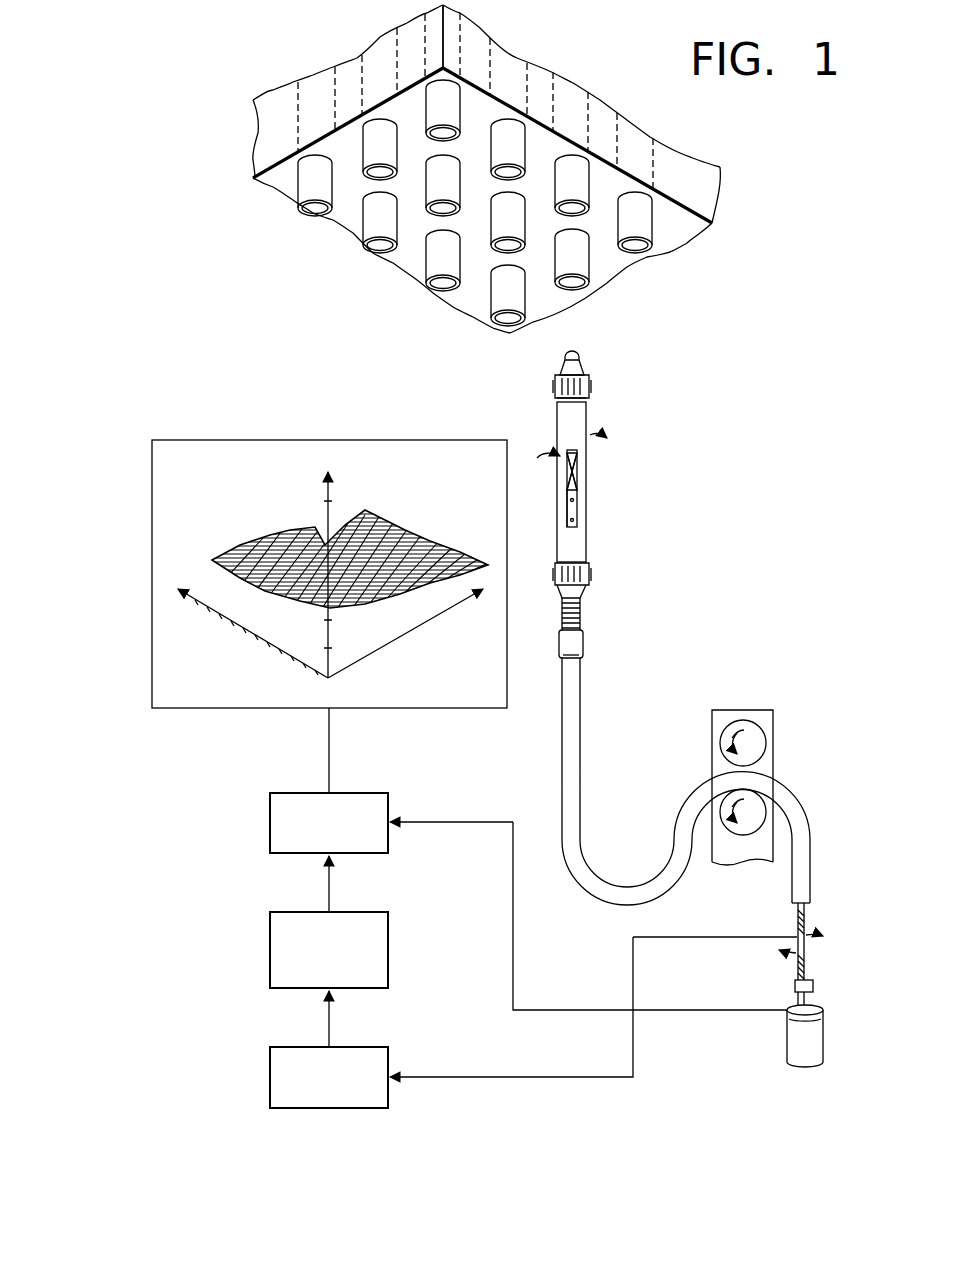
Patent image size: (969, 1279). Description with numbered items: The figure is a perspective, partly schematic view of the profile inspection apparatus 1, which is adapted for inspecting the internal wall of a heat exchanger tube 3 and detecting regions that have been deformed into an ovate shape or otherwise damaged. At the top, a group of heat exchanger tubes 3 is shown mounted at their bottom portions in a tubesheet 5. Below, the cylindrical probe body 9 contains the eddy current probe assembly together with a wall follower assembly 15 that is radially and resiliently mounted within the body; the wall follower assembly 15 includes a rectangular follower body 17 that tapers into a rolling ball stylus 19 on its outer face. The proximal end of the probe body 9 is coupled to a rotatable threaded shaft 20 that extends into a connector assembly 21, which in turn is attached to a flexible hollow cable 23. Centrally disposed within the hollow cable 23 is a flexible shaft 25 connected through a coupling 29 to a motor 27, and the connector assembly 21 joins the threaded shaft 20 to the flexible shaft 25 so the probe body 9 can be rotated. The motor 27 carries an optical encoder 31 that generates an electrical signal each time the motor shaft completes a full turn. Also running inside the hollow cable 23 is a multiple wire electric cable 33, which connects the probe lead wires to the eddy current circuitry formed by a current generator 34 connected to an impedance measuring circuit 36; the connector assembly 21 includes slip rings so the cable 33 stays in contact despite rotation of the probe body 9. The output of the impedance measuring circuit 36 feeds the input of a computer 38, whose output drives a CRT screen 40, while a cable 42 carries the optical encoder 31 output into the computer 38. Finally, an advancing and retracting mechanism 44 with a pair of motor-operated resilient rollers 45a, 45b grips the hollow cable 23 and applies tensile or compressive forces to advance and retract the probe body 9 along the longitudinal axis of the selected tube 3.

The profile inspection apparatus 1 is at (273, 365).
The heat exchanger tube 3 is at (318, 222).
The tubesheet 5 is at (700, 192).
The cylindrical probe body 9 is at (580, 474).
The wall follower assembly 15 is at (577, 492).
The rectangular follower body 17 is at (573, 458).
The rolling ball stylus 19 is at (572, 473).
The rotatable threaded shaft 20 is at (580, 615).
The connector assembly 21 is at (583, 647).
The flexible hollow cable 23 is at (580, 692).
The flexible shaft 25 is at (812, 918).
The motor 27 is at (787, 1037).
The coupling 29 is at (815, 989).
The optical encoder 31 is at (823, 1012).
The multiple wire electric cable 33 is at (733, 938).
The current generator 34 is at (270, 1065).
The impedance measuring circuit 36 is at (270, 940).
The computer 38 is at (310, 793).
The CRT screen 40 is at (455, 710).
The cable 42 is at (593, 1010).
The advancing and retracting mechanism 44 is at (748, 800).
The resilient roller 45a is at (770, 746).
The resilient roller 45b is at (743, 840).